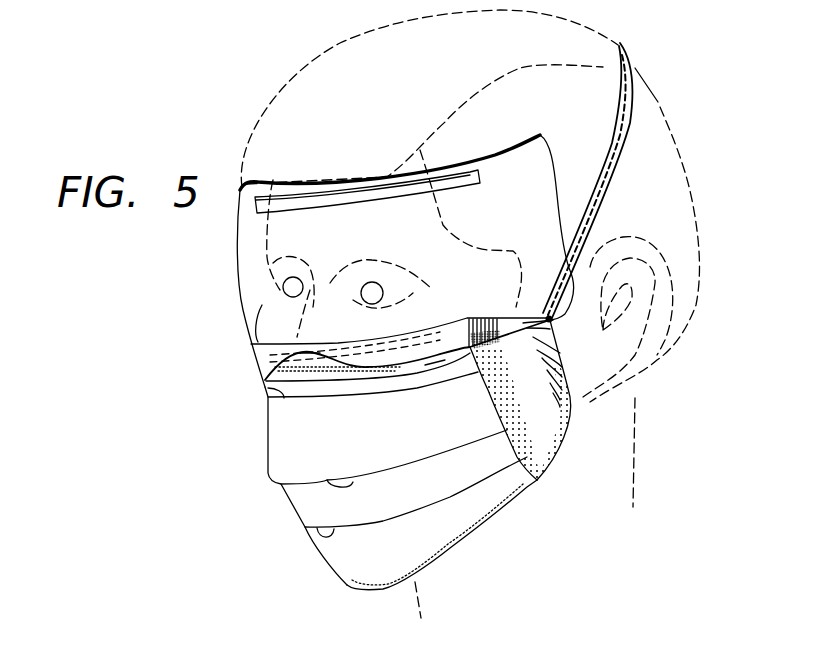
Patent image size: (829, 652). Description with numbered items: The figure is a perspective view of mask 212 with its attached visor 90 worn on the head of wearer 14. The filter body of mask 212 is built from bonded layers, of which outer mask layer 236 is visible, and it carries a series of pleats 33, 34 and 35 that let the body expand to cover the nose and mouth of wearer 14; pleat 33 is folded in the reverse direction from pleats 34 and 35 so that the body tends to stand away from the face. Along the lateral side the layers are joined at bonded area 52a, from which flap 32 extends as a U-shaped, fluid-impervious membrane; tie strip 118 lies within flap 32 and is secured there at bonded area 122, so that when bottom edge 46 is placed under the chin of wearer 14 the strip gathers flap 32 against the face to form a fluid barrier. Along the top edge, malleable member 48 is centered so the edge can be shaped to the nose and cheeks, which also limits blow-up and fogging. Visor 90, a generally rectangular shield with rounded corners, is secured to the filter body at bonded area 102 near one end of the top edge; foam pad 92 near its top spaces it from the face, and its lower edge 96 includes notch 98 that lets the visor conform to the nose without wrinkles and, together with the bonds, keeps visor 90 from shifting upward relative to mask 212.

The wearer 14 is at (658, 102).
The flap 32 is at (540, 437).
The pleat 33 is at (262, 389).
The pleat 34 is at (327, 479).
The pleat 35 is at (330, 529).
The bottom edge 46 is at (443, 557).
The malleable member 48 is at (447, 333).
The bonded area 52a is at (497, 407).
The visor 90 is at (232, 265).
The foam pad 92 is at (466, 173).
The lower edge 96 is at (433, 360).
The notch 98 is at (315, 350).
The bonded area 102 is at (495, 317).
The tie strip 118 is at (624, 50).
The bonded area 122 is at (567, 403).
The mask 212 is at (262, 500).
The outer mask layer 236 is at (268, 413).